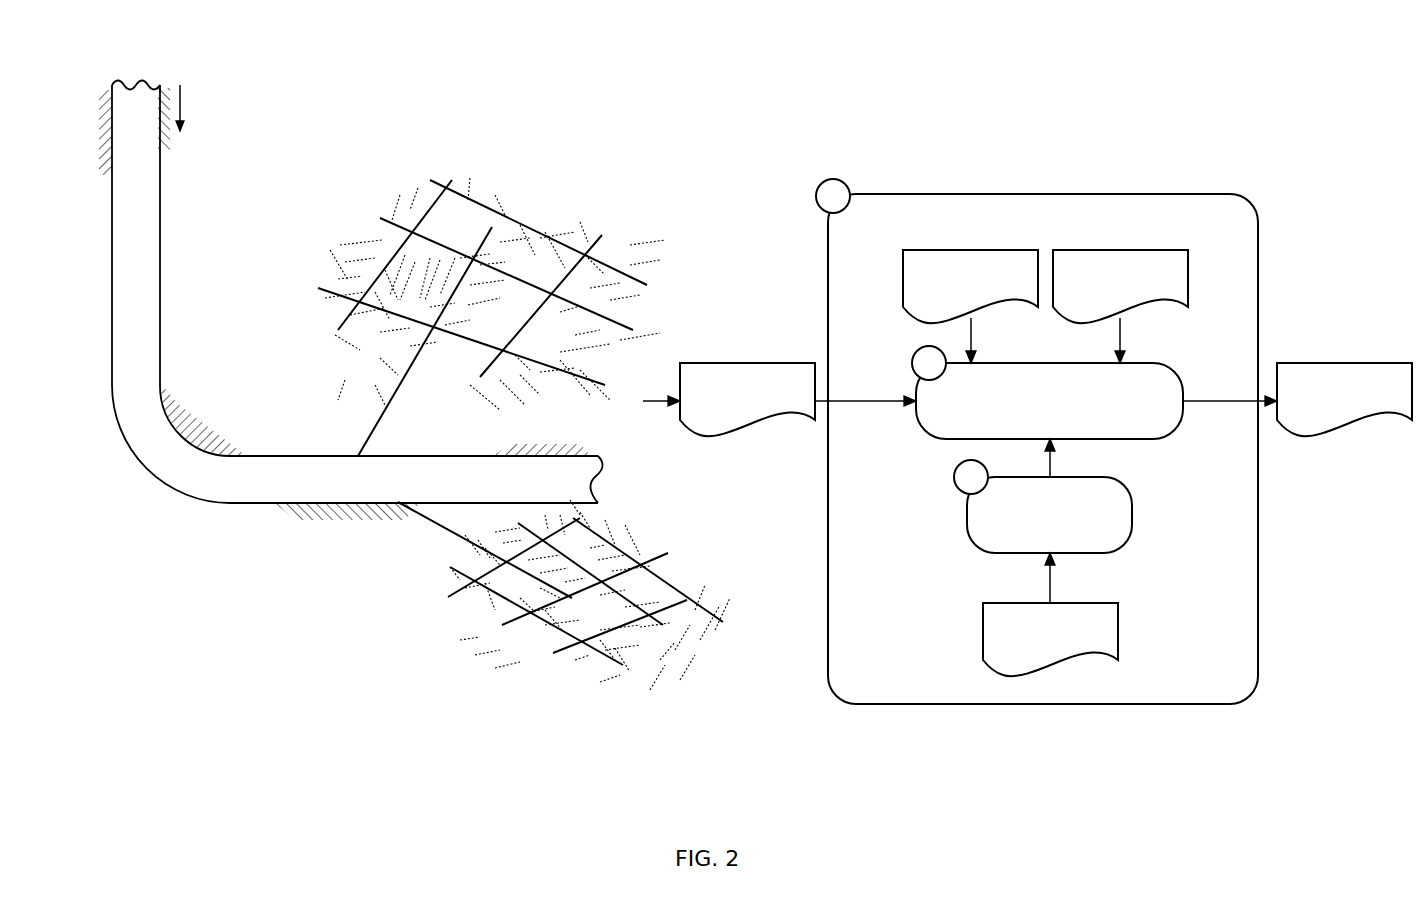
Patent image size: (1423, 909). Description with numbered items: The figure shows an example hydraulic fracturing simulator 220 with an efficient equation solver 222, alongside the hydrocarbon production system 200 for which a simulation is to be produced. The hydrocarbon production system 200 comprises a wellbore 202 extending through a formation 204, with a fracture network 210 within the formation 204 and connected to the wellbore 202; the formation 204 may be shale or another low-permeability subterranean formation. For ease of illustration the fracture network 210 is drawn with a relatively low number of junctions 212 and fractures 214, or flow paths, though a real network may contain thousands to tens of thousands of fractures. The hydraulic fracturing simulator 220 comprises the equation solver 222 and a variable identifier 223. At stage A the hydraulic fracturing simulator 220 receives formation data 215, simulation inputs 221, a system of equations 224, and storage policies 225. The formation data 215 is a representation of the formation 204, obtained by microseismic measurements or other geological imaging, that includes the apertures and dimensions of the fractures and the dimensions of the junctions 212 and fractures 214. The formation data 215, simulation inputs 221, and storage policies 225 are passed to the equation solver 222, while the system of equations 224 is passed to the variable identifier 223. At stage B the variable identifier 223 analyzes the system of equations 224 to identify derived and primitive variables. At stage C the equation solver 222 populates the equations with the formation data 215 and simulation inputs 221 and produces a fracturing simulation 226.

The hydrocarbon production system 200 is at (82, 193).
The wellbore 202 is at (160, 214).
The formation 204 is at (236, 367).
The fracture network 210 is at (660, 229).
The junctions 212 is at (408, 228).
The fractures 214 is at (509, 214).
The formation data 215 is at (748, 362).
The hydraulic fracturing simulator 220 is at (826, 240).
The simulation inputs 221 is at (902, 283).
The equation solver 222 is at (915, 382).
The variable identifier 223 is at (966, 518).
The system of equations 224 is at (981, 640).
The storage policies 225 is at (1190, 267).
The fracturing simulation 226 is at (1346, 362).